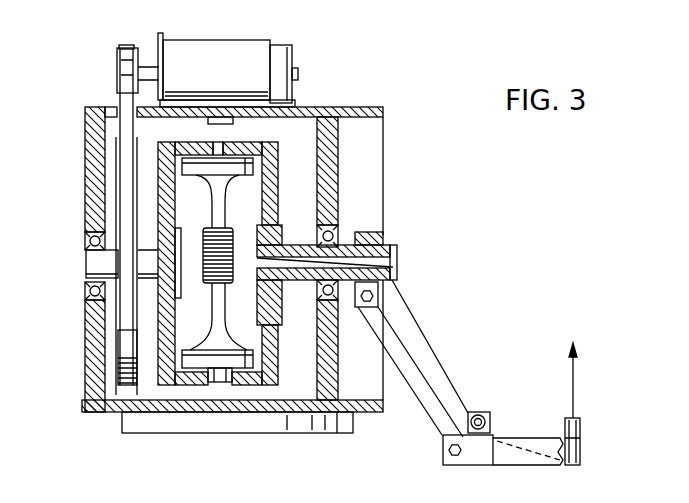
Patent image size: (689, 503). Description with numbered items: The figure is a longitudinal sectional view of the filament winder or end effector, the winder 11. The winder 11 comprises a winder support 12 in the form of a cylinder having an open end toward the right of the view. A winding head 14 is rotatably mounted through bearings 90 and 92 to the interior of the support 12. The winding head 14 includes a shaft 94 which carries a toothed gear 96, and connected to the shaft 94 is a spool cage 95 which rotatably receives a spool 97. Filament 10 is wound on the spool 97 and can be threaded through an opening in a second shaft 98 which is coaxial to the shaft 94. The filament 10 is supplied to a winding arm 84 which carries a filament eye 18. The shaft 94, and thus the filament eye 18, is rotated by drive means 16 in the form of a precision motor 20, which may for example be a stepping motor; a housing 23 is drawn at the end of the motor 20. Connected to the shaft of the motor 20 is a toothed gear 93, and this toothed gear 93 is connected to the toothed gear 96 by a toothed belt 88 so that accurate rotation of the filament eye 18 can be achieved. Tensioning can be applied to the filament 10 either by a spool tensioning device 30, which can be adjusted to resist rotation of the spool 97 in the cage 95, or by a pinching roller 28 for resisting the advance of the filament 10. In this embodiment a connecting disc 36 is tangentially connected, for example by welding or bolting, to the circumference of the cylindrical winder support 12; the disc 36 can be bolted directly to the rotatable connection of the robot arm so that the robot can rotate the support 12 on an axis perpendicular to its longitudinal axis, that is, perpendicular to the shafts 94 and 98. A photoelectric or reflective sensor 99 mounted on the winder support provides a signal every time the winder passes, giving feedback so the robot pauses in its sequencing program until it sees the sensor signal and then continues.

The filament 10 is at (427, 335).
The winder 11 is at (313, 62).
The winder support 12 is at (372, 108).
The winding head 14 is at (403, 230).
The drive means 16 is at (104, 54).
The filament eye 18 is at (582, 427).
The precision motor 20 is at (213, 55).
The encoder 23 is at (283, 55).
The pinching roller 28 is at (480, 412).
The spool tensioning device 30 is at (205, 370).
The connecting disc 36 is at (327, 433).
The winding arm 84 is at (433, 418).
The toothed belt 88 is at (122, 121).
The bearing 90 is at (90, 297).
The bearing 92 is at (338, 228).
The toothed gear 93 is at (125, 68).
The shaft 94 is at (110, 252).
The spool cage 95 is at (250, 375).
The toothed gear 96 is at (118, 350).
The spool 97 is at (212, 322).
The second shaft 98 is at (390, 252).
The photoelectric or reflective sensor 99 is at (235, 123).